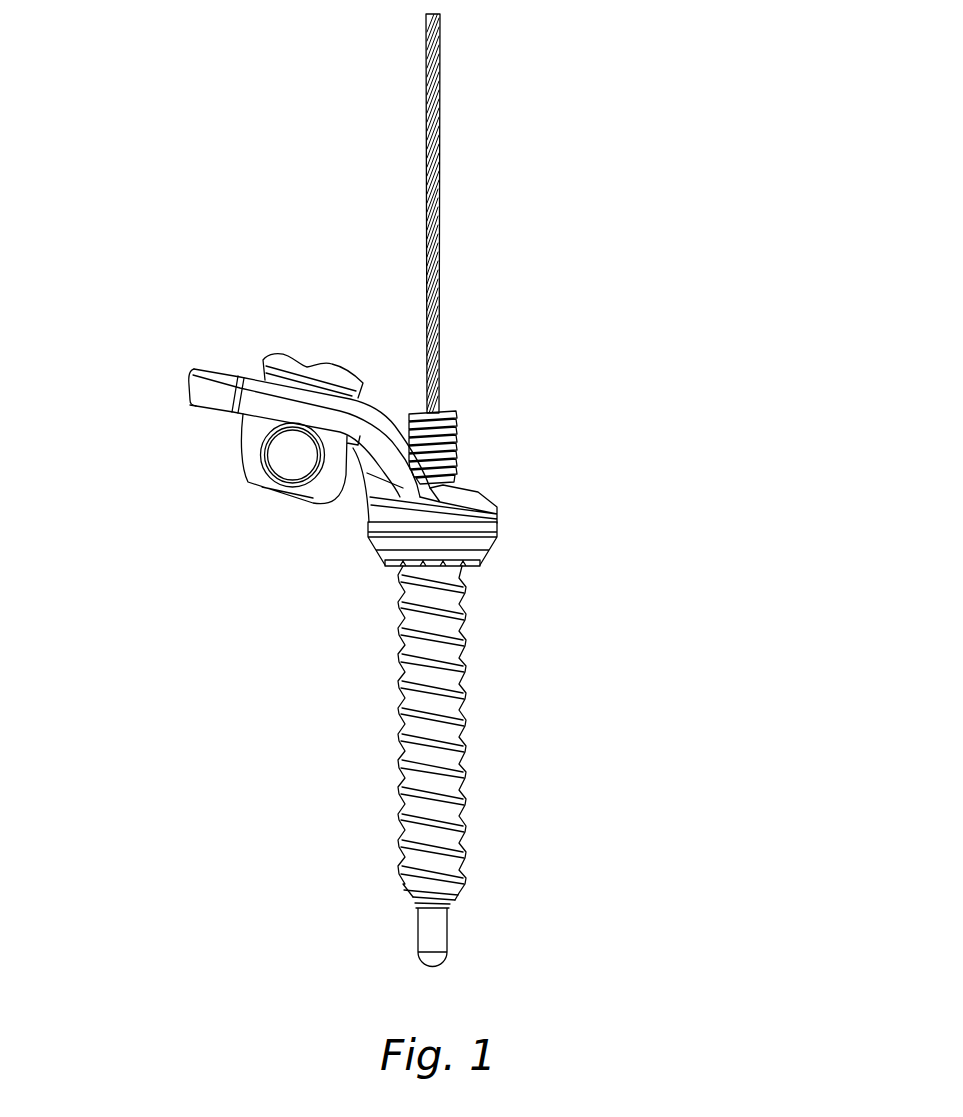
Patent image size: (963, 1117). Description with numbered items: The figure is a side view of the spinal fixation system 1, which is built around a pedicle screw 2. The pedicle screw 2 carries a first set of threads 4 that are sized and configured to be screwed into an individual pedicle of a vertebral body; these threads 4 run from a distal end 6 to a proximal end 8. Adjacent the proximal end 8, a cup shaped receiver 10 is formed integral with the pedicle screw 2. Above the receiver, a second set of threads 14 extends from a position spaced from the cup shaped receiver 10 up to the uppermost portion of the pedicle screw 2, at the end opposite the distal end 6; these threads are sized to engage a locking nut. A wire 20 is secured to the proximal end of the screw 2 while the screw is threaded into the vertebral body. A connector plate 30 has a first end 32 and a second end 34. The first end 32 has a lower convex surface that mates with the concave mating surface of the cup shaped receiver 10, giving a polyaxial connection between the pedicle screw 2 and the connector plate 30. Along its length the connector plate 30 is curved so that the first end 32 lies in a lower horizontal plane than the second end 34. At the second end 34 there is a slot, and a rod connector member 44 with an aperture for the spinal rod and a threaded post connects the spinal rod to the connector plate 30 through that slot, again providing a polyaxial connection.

The spinal fixation system 1 is at (643, 196).
The pedicle screw 2 is at (495, 709).
The first set of threads 4 is at (403, 698).
The distal end 6 is at (450, 907).
The proximal end 8 is at (478, 563).
The cup shaped receiver 10 is at (492, 547).
The second set of threads 14 is at (457, 420).
The wire 20 is at (440, 163).
The connector plate 30 is at (255, 397).
The first end 32 is at (500, 512).
The second end 34 is at (195, 367).
The rod connector member 44 is at (242, 468).